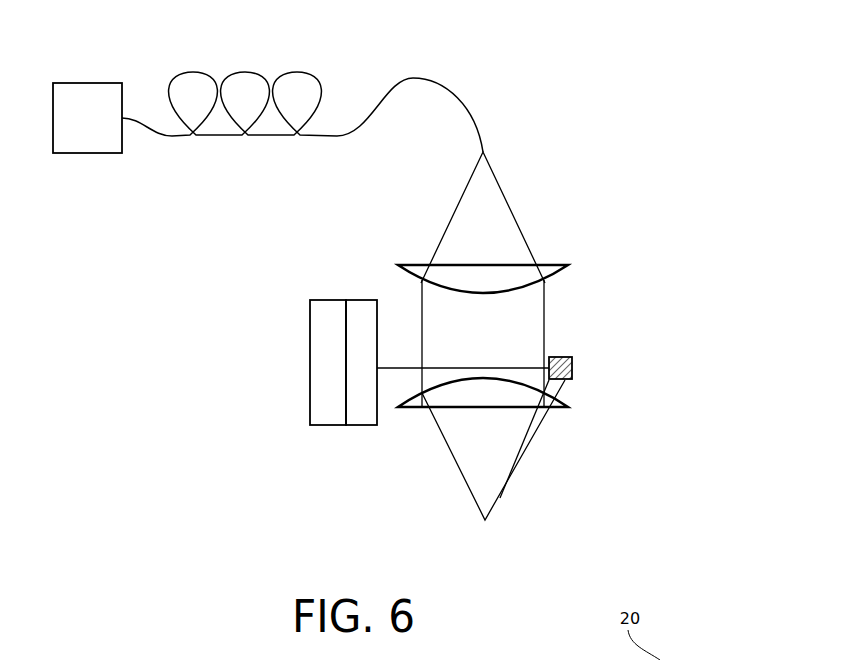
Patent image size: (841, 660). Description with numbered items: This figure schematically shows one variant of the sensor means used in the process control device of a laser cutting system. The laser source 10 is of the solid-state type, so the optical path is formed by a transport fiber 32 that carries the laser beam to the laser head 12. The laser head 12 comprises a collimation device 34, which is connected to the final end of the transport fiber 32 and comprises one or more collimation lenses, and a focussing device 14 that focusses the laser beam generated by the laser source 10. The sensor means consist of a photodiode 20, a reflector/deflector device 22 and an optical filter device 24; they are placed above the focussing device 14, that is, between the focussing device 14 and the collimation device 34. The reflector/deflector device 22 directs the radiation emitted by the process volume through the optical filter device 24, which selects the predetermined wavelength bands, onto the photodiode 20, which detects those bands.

The laser source 10 is at (78, 153).
The transport fiber 32 is at (423, 78).
The collimation device 34 is at (550, 262).
The laser head 12 is at (572, 330).
The photodiode 20 is at (330, 300).
The optical filter device 24 is at (363, 426).
The focussing device 14 is at (557, 410).
The reflector/deflector device 22 is at (572, 367).